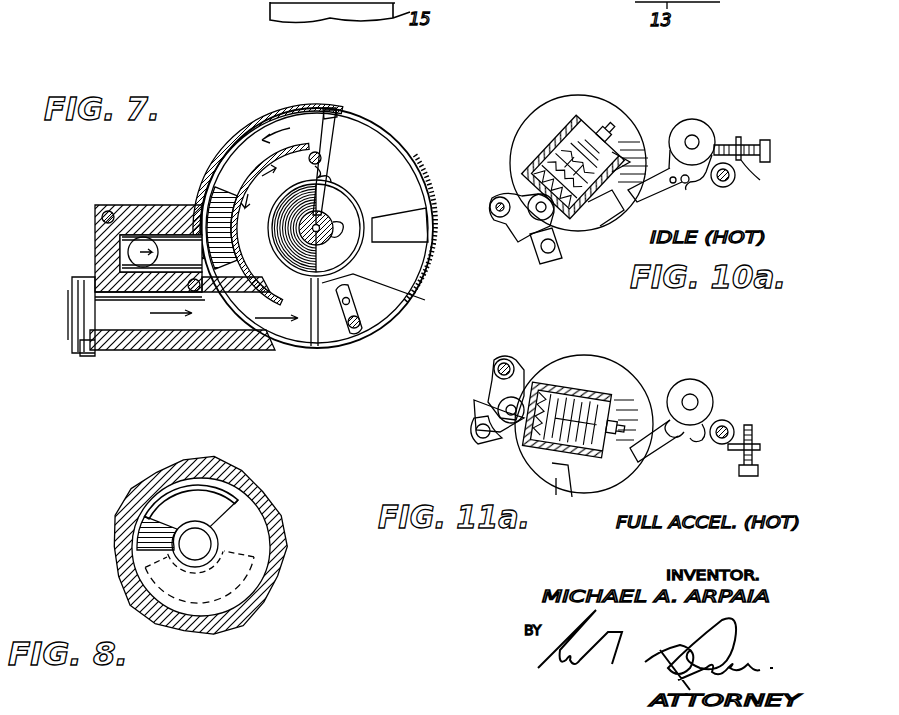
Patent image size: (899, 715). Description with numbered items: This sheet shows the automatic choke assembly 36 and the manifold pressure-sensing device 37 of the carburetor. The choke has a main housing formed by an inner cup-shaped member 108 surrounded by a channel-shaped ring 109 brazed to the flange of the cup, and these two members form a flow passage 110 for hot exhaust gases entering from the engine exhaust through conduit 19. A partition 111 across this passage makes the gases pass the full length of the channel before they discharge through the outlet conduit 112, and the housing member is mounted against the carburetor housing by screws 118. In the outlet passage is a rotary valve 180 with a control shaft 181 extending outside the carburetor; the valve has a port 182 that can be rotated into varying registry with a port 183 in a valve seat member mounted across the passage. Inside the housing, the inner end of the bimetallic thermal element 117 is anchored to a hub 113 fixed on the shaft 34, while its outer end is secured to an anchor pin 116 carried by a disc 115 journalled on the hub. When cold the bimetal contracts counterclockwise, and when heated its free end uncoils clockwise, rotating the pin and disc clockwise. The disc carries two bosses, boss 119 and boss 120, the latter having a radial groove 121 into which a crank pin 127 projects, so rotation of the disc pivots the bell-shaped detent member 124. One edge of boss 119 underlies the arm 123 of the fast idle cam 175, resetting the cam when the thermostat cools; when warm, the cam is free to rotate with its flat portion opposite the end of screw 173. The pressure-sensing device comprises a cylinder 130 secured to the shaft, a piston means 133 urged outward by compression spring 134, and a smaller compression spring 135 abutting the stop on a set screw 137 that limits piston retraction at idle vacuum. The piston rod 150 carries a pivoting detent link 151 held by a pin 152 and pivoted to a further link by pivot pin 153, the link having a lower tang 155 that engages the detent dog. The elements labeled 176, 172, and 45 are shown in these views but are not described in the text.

In FIG. 7, the automatic choke assembly 36 is at (387, 120).
In FIG. 7, the inner cup-shaped member 108 is at (255, 160).
In FIG. 7, the channel-shaped ring 109 is at (222, 156).
In FIG. 7, the disc 115 is at (333, 112).
In FIG. 10A, the disc 115 is at (570, 106).
In FIG. 11A, the disc 115 is at (590, 358).
In FIG. 7, the anchor pin 116 is at (314, 152).
In FIG. 7, the bimetallic thermal element 117 is at (326, 170).
In FIG. 7, the hub 113 is at (342, 194).
In FIG. 7, the shaft 34 is at (308, 228).
In FIG. 7, the screws 118 is at (110, 214).
In FIG. 7, the outlet conduit 112 is at (135, 255).
In FIG. 7, the partition 111 is at (196, 311).
In FIG. 7, the flow passage 110 is at (282, 336).
In FIG. 7, the boss 119 is at (402, 240).
In FIG. 10A, the boss 119 is at (602, 224).
In FIG. 11A, the boss 119 is at (552, 472).
In FIG. 7, the boss 120 is at (380, 286).
In FIG. 7, the radial groove 121 is at (350, 298).
In FIG. 7, the crank pin 127 is at (357, 328).
In FIG. 7, the conduit 19 is at (70, 344).
In FIG. 8, the rotary valve 180 is at (248, 512).
In FIG. 8, the control shaft 181 is at (208, 540).
In FIG. 8, the port 182 is at (140, 533).
In FIG. 8, the port 183 is at (150, 564).
In FIG. 10A, the cylinder 130 is at (562, 136).
In FIG. 11A, the cylinder 130 is at (604, 392).
In FIG. 10A, the compression spring 134 is at (592, 124).
In FIG. 11A, the compression spring 134 is at (582, 470).
In FIG. 10A, the manifold pressure-sensing device 37 is at (528, 151).
In FIG. 11A, the manifold pressure-sensing device 37 is at (626, 400).
In FIG. 10A, the piston means 133 is at (536, 165).
In FIG. 11A, the piston means 133 is at (528, 452).
In FIG. 10A, the piston rod 150 is at (545, 186).
In FIG. 10A, the set screw 137 is at (602, 148).
In FIG. 10A, the compression spring 135 is at (632, 140).
In FIG. 10A, the pivot pin 153 is at (490, 200).
In FIG. 11A, the pivot pin 153 is at (506, 357).
In FIG. 10A, the detent link 151 is at (508, 218).
In FIG. 11A, the detent link 151 is at (492, 378).
In FIG. 10A, the lower tang 155 is at (536, 244).
In FIG. 11A, the lower tang 155 is at (478, 412).
In FIG. 10A, the detent member 124 is at (552, 254).
In FIG. 11A, the detent member 124 is at (476, 430).
In FIG. 11A, the pin 152 is at (516, 398).
In FIG. 10A, the arm 123 is at (640, 192).
In FIG. 11A, the arm 123 is at (640, 458).
In FIG. 10A, the pivot shaft 176 is at (694, 140).
In FIG. 11A, the pivot shaft 176 is at (698, 400).
In FIG. 10A, the fast idle cam 175 is at (716, 134).
In FIG. 11A, the fast idle cam 175 is at (692, 382).
In FIG. 10A, the screw 173 is at (766, 142).
In FIG. 11A, the screw 173 is at (756, 470).
In FIG. 10A, the bracket 172 is at (744, 166).
In FIG. 10A, the stop pin 45 is at (728, 184).
In FIG. 11A, the stop pin 45 is at (720, 444).